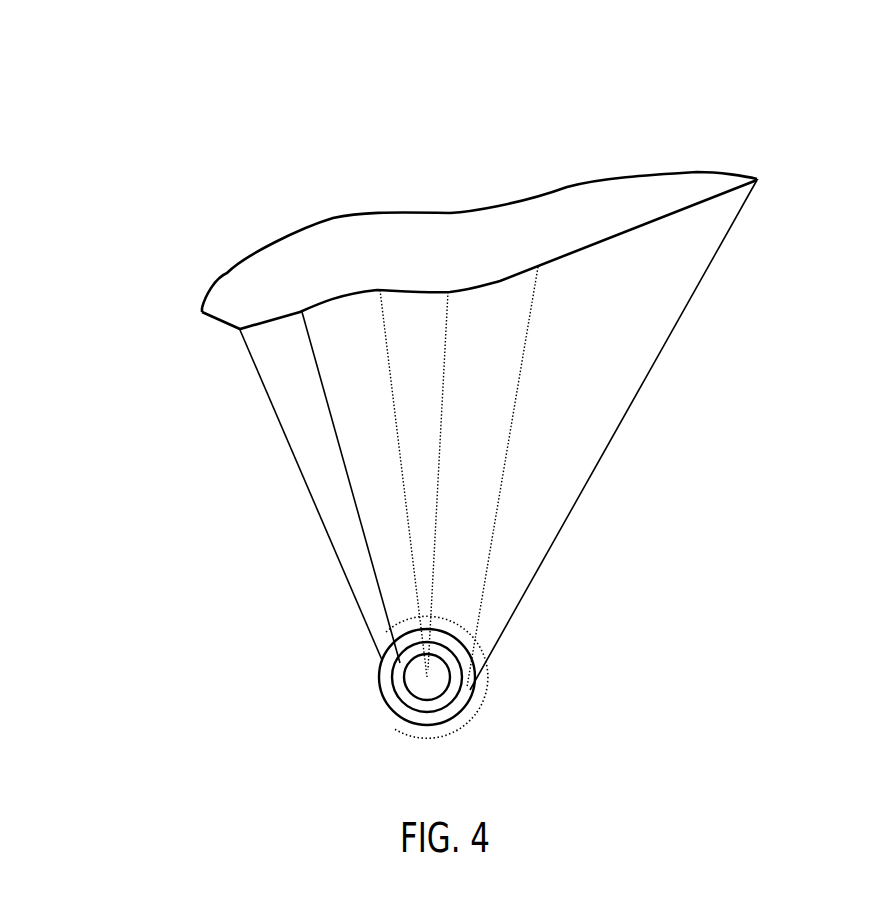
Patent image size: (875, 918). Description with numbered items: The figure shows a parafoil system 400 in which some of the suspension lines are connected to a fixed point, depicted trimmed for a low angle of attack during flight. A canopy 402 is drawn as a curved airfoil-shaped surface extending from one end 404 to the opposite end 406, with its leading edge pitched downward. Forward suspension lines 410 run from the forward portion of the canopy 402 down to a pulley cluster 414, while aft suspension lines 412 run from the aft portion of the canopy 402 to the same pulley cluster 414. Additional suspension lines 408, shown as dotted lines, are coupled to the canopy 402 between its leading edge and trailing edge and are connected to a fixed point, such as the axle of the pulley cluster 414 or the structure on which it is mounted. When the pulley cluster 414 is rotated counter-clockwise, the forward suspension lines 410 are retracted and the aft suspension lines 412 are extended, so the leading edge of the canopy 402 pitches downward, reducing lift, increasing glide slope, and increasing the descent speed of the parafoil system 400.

The parafoil system 400 is at (748, 92).
The canopy 402 is at (455, 232).
The first end of reflector 404 is at (230, 290).
The second end of reflector 406 is at (687, 187).
The additional suspension lines 408 is at (410, 548).
The forward suspension lines 410 is at (350, 487).
The aft suspension lines 412 is at (495, 490).
The pulley cluster 414 is at (377, 688).